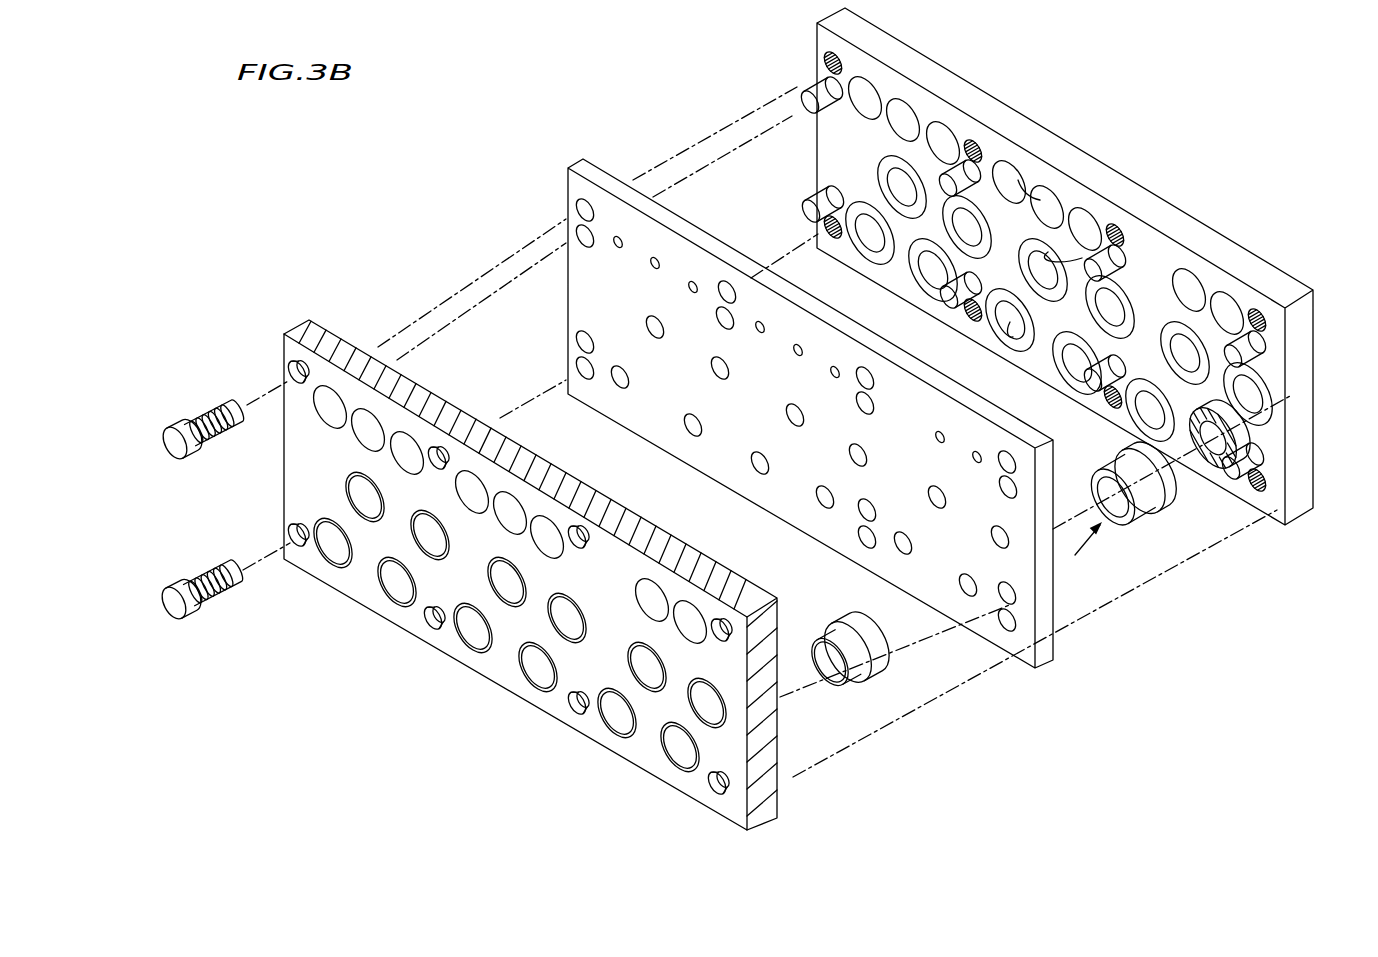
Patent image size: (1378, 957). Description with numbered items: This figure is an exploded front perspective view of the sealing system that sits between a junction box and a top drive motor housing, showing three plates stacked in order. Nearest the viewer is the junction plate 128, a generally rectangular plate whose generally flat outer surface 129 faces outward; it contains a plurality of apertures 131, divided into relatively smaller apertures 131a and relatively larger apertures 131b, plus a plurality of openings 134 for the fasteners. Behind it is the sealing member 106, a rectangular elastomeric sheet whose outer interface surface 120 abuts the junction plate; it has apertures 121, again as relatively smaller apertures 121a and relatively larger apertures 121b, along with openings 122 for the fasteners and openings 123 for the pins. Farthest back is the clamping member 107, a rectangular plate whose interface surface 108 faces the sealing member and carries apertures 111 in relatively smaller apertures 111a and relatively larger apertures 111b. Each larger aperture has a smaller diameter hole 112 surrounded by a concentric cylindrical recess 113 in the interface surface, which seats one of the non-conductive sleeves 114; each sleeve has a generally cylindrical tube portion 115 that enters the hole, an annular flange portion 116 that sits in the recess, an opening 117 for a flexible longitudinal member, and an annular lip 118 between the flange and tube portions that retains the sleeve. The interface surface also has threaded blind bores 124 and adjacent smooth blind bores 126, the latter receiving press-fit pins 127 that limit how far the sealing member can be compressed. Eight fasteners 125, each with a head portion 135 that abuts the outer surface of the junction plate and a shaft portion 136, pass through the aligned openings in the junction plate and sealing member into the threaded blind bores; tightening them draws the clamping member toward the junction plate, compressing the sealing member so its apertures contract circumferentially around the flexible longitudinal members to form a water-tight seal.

The sealing member 106 is at (878, 429).
The clamping member 107 is at (980, 264).
The interface surface 108 is at (1127, 290).
The apertures 111 is at (1082, 258).
The relatively smaller apertures 111a is at (1018, 180).
The relatively larger apertures 111b is at (1010, 322).
The smaller diameter hole 112 is at (1226, 436).
The cylindrical recess 113 is at (1212, 462).
The sleeves 114 is at (895, 172).
The cylindrical tube portion 115 is at (1155, 497).
The annular flange portion 116 is at (1115, 474).
The opening 117 is at (1075, 555).
The annular lip 118 is at (1120, 468).
The outer interface surface 120 is at (594, 324).
The apertures 121 is at (652, 318).
The relatively smaller apertures 121a is at (969, 457).
The relatively larger apertures 121b is at (928, 497).
The openings 122 is at (576, 210).
The openings 123 is at (577, 238).
The threaded blind bores 124 is at (822, 60).
The fasteners 125 is at (207, 512).
The smooth blind bores 126 is at (838, 82).
The pins 127 is at (804, 96).
The junction plate 128 is at (530, 575).
The outer surface 129 is at (582, 595).
The apertures 131 is at (512, 600).
The relatively smaller apertures 131a is at (372, 425).
The relatively larger apertures 131b is at (333, 566).
The openings 134 is at (292, 362).
The head portion 135 is at (174, 434).
The shaft portion 136 is at (232, 426).